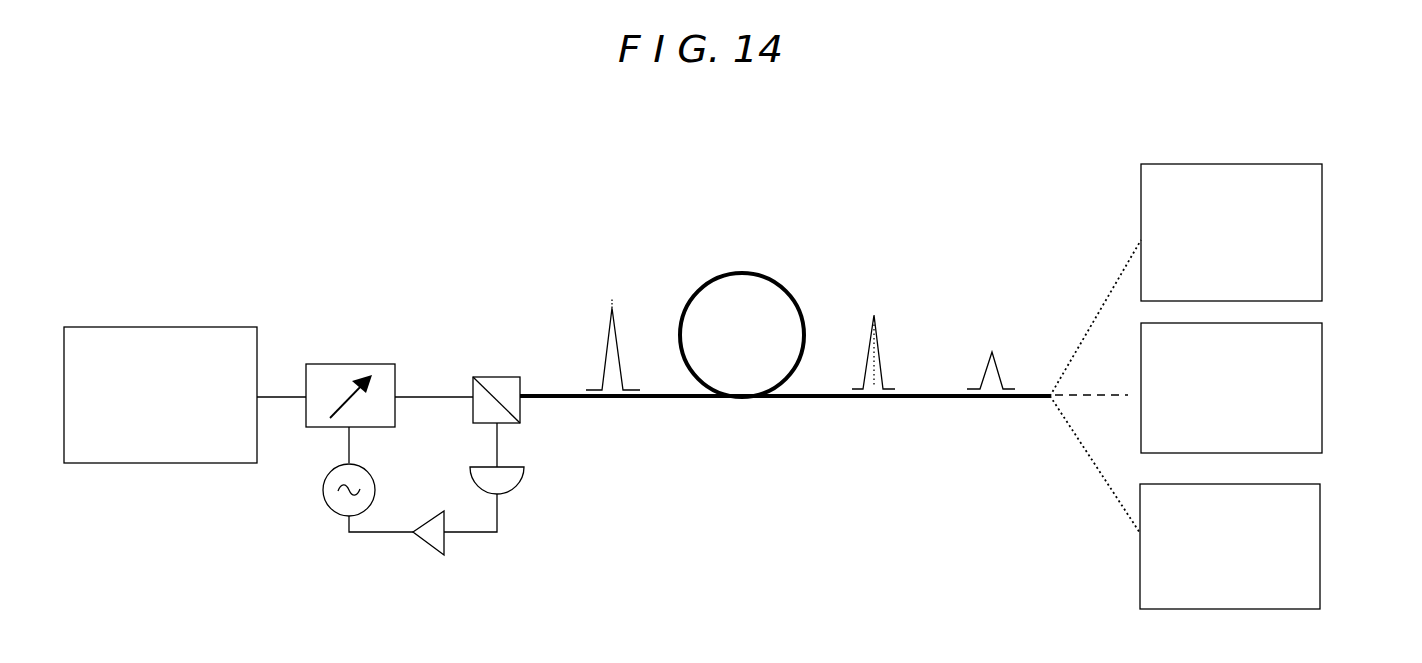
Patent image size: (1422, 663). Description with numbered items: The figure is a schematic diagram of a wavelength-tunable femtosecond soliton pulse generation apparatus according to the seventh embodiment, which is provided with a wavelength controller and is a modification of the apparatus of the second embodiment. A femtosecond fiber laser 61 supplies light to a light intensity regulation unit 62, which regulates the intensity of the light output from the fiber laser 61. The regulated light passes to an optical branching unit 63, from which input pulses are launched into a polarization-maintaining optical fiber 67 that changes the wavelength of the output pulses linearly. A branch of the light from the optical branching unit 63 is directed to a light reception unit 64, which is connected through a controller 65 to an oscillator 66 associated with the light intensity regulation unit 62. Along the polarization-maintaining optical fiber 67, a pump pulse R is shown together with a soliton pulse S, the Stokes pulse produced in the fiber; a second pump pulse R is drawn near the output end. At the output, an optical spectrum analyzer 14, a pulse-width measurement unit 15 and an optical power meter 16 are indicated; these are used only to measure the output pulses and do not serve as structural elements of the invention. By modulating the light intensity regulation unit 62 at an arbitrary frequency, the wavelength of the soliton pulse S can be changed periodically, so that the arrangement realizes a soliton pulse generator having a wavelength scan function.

The optical spectrum analyzer 14 is at (1322, 225).
The pulse-width measurement unit 15 is at (1322, 372).
The optical power meter 16 is at (1320, 533).
The femtosecond fiber laser 61 is at (168, 322).
The light intensity regulation unit 62 is at (347, 362).
The optical branching unit 63 is at (497, 375).
The light reception unit 64 is at (518, 483).
The controller 65 is at (423, 543).
The oscillator 66 is at (328, 512).
The polarization-maintaining optical fiber 67 is at (940, 400).
The pump pulse R is at (615, 290).
The soliton pulse S is at (876, 305).